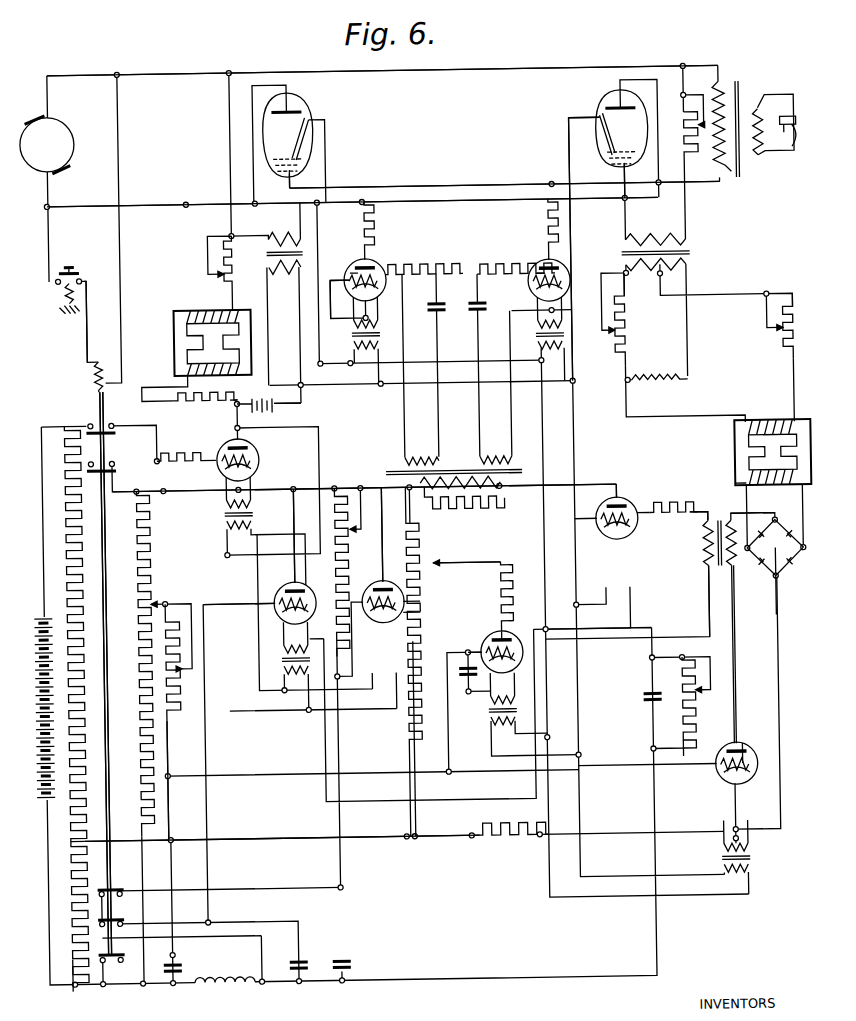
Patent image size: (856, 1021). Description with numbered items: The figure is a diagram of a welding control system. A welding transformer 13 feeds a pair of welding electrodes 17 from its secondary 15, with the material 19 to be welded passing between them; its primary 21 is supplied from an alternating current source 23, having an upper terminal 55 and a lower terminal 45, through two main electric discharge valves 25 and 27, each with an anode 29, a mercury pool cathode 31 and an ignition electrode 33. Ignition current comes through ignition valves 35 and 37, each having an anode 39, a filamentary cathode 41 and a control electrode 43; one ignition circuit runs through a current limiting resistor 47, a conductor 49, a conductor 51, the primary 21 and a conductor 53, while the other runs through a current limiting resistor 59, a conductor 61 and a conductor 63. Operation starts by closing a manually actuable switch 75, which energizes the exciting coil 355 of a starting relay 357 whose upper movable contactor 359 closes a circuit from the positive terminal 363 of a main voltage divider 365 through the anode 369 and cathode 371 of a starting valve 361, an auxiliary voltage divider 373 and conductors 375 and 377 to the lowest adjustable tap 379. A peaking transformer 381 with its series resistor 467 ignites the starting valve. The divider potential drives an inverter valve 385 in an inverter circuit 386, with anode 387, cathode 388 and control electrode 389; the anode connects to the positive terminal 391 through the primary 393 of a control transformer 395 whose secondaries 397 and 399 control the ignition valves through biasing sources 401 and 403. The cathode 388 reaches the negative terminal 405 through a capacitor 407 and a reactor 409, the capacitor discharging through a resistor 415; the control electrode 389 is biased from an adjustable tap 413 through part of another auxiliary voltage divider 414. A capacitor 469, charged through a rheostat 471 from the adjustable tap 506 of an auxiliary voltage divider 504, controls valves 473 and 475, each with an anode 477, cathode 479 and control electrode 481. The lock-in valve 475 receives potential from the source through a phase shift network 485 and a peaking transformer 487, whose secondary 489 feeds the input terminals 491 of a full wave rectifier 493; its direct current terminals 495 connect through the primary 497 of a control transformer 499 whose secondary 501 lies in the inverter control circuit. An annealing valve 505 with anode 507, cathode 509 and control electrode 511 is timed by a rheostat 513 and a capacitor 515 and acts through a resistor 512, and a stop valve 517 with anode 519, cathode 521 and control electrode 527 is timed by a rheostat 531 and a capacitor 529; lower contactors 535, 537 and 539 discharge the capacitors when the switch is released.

The welding transformer 13 is at (749, 64).
The secondary 15 is at (771, 152).
The welding electrodes 17 is at (799, 118).
The material 19 is at (798, 152).
The primary 21 is at (725, 182).
The alternating current source 23 is at (98, 132).
The electric discharge valve 25 is at (293, 100).
The electric discharge valve 27 is at (624, 96).
The anode 29 is at (316, 118).
The mercury pool cathode 31 is at (295, 172).
The ignition electrode 33 is at (305, 150).
The ignition valve 35 is at (378, 262).
The ignition valve 37 is at (566, 260).
The anode 39 is at (358, 268).
The filamentary cathode 41 is at (366, 315).
The control electrode 43 is at (385, 280).
The lower terminal 45 is at (58, 168).
The current limiting resistor 47 is at (379, 225).
The conductor 49 is at (337, 244).
The conductor 51 is at (462, 186).
The conductor 53 is at (473, 70).
The upper terminal 55 is at (51, 110).
The current limiting resistor 59 is at (558, 218).
The conductor 61 is at (578, 165).
The conductor 63 is at (496, 201).
The manually actuable switch 75 is at (82, 251).
The exciting coil 355 is at (80, 346).
The starting relay 357 is at (98, 366).
The upper movable contactor 359 is at (117, 432).
The starting valve 361 is at (251, 447).
The positive terminal 363 is at (62, 421).
The main voltage divider 365 is at (86, 487).
The anode 369 is at (230, 444).
The cathode 371 is at (250, 484).
The auxiliary voltage divider 373 is at (402, 601).
The conductor 375 is at (414, 793).
The conductor 377 is at (276, 836).
The lowest adjustable tap 379 is at (80, 836).
The peaking transformer 381 is at (175, 302).
The inverter valve 385 is at (617, 502).
The inverter circuit 386 is at (512, 517).
The anode 387 is at (619, 508).
The cathode 388 is at (630, 532).
The control electrode 389 is at (592, 521).
The positive terminal 391 is at (336, 487).
The primary 393 is at (503, 483).
The control transformer 395 is at (479, 439).
The secondary 397 is at (426, 454).
The secondary 399 is at (504, 454).
The biasing source 401 is at (440, 314).
The biasing source 403 is at (483, 314).
The negative terminal 405 is at (68, 981).
The capacitor 407 is at (642, 696).
The reactor 409 is at (212, 974).
The adjustable tap 413 is at (430, 561).
The auxiliary voltage divider 414 is at (504, 563).
The resistor 415 is at (687, 660).
The series resistor 467 is at (230, 233).
The capacitor 469 is at (172, 958).
The rheostat 471 is at (178, 716).
The electric discharge valve 473 is at (506, 672).
The lock-in valve 475 is at (744, 751).
The anode 477 is at (488, 642).
The cathode 479 is at (508, 694).
The control electrode 481 is at (466, 652).
The phase shift network 485 is at (671, 329).
The peaking transformer 487 is at (780, 409).
The secondary 489 is at (736, 488).
The input terminals 491 is at (762, 576).
The full wave rectifier 493 is at (784, 556).
The direct current terminals 495 is at (790, 504).
The primary 497 is at (708, 574).
The control transformer 499 is at (732, 522).
The secondary 501 is at (704, 538).
The auxiliary voltage divider 504 is at (164, 760).
The annealing valve 505 is at (286, 588).
The adjustable tap 506 is at (156, 600).
The anode 507 is at (294, 588).
The cathode 509 is at (306, 616).
The control electrode 511 is at (308, 602).
The resistor 512 is at (516, 840).
The rheostat 513 is at (146, 546).
The capacitor 515 is at (300, 958).
The stop valve 517 is at (388, 590).
The anode 519 is at (376, 584).
The cathode 521 is at (404, 612).
The control electrode 527 is at (404, 606).
The capacitor 529 is at (342, 958).
The rheostat 531 is at (349, 560).
The lower contactor 535 is at (126, 875).
The lower contactor 537 is at (126, 907).
The lower contactor 539 is at (118, 952).